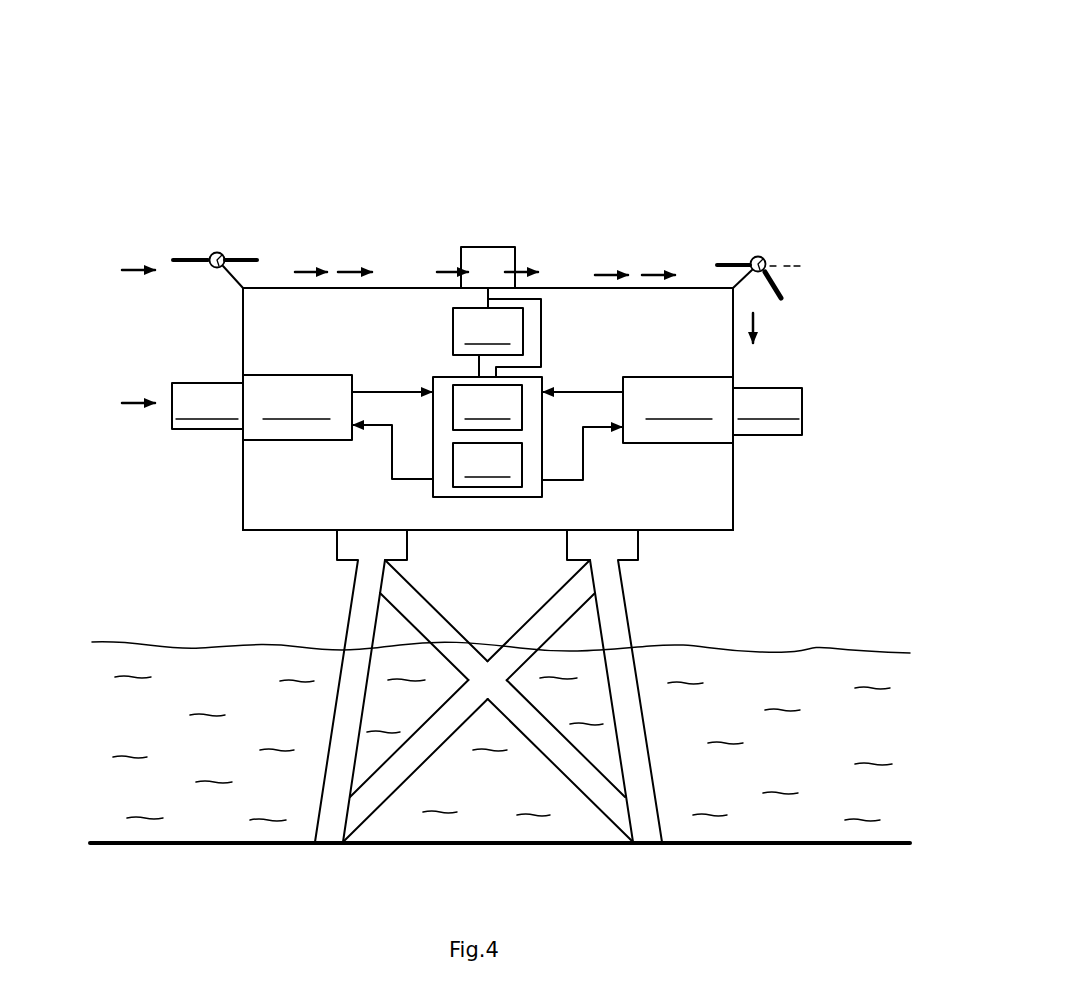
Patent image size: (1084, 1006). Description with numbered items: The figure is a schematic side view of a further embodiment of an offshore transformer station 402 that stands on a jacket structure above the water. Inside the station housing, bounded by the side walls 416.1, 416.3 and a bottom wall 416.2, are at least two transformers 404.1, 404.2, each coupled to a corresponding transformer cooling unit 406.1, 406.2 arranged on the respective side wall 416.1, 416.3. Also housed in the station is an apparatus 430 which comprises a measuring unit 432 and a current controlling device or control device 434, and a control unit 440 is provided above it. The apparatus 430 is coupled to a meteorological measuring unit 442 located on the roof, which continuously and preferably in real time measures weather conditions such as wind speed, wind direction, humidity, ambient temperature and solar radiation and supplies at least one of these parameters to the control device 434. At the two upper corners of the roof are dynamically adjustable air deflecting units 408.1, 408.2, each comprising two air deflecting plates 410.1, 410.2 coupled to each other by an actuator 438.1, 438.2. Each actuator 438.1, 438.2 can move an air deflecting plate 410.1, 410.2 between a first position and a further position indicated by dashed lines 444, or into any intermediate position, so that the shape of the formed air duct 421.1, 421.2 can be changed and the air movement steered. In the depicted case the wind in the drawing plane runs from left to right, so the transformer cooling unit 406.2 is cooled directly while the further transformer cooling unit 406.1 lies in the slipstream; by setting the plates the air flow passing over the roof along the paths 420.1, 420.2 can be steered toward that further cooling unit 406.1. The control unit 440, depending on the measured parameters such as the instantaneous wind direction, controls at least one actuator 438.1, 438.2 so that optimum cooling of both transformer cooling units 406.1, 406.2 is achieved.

The transformer station 402 is at (247, 98).
The air deflecting unit 408.1 is at (746, 246).
The air deflecting unit 408.2 is at (480, 234).
The actuator 438.1 is at (210, 255).
The actuator 438.2 is at (765, 257).
The air deflecting plate 410.1 is at (192, 263).
The air deflecting plate 410.2 is at (247, 258).
The air duct 421.1 is at (710, 272).
The air duct 421.2 is at (260, 271).
The first flow path 420.1 is at (733, 288).
The second flow path 420.2 is at (243, 288).
The meteorological measuring unit 442 is at (488, 255).
The dashed lines 444 is at (783, 268).
The control unit 440 is at (497, 332).
The apparatus 430 is at (487, 481).
The measuring unit 432 is at (487, 407).
The control device 434 is at (488, 497).
The transformer 404.1 is at (678, 410).
The transformer 404.2 is at (297, 407).
The transformer cooling unit 406.1 is at (767, 411).
The transformer cooling unit 406.2 is at (207, 406).
The side wall 416.1 is at (243, 478).
The housing bottom wall 416.2 is at (300, 495).
The side wall 416.3 is at (733, 497).